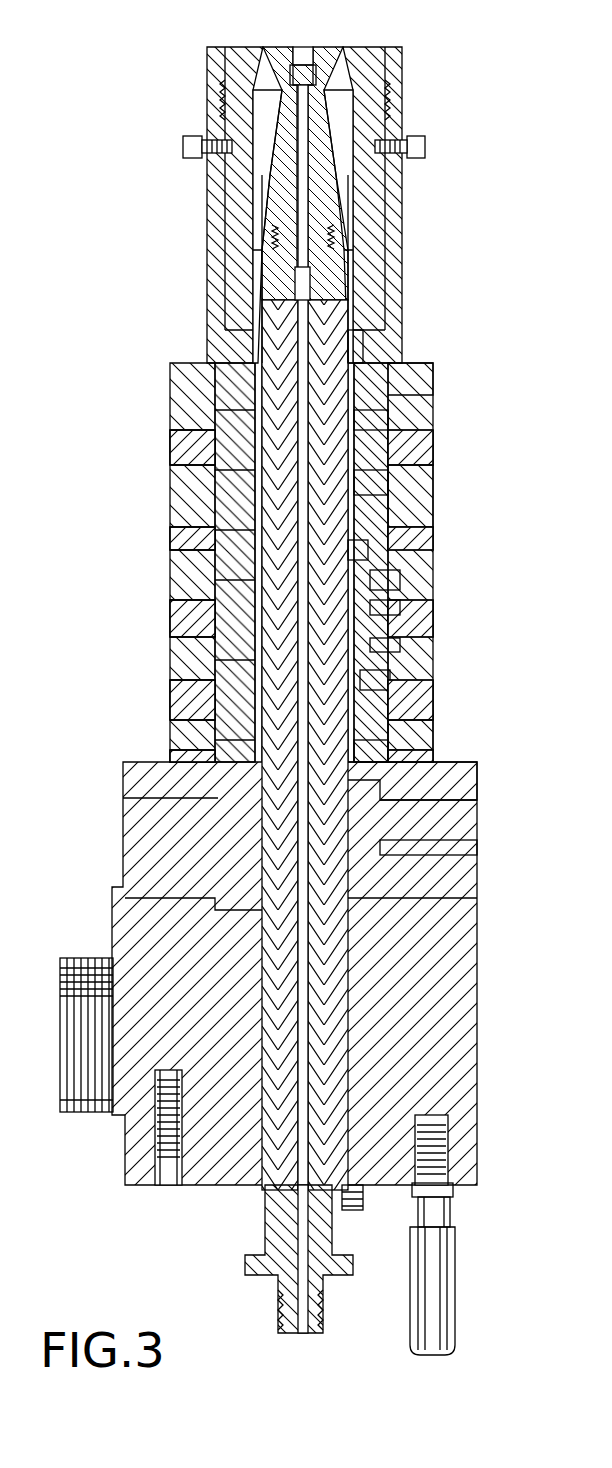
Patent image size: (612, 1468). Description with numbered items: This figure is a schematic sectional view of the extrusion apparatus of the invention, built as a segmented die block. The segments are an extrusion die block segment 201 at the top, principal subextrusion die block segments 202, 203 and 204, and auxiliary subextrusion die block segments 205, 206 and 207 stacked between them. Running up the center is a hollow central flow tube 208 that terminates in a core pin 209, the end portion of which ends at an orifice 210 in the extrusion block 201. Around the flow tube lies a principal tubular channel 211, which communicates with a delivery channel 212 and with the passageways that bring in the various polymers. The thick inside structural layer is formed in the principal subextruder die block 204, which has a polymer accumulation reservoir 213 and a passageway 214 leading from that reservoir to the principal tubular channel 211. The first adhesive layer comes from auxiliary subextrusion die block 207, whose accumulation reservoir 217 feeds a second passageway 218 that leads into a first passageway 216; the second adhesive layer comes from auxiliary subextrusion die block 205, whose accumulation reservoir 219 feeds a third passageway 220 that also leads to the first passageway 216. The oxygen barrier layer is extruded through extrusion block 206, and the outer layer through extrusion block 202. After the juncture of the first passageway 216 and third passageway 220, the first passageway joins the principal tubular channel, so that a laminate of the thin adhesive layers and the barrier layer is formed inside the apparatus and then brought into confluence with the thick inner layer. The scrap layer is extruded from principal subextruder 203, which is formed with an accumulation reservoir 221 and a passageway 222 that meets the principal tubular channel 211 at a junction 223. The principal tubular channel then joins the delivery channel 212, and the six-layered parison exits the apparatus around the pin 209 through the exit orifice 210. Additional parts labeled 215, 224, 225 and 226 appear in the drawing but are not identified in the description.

The extrusion die block segment 201 is at (403, 104).
The principal subextrusion die block segment 202 is at (436, 407).
The principal subextrusion die block segment 203 is at (435, 508).
The principal subextrusion die block segment 204 is at (480, 824).
The subextrusion die block segment 205 is at (385, 598).
The subextrusion die block segment 206 is at (435, 673).
The subextrusion die block segment 207 is at (435, 739).
The hollow central flow tube 208 is at (278, 1292).
The core pin 209 is at (297, 58).
The orifice 210 is at (333, 57).
The principal tubular channel 211 is at (350, 547).
The delivery channel 212 is at (352, 205).
The polymer accumulation reservoir 213 is at (375, 845).
The passageway 214 is at (372, 803).
The seal ring 215 is at (360, 750).
The first passageway 216 is at (435, 727).
The accumulation reservoir 217 is at (372, 680).
The second passageway 218 is at (385, 645).
The accumulation reservoir 219 is at (390, 606).
The third passageway 220 is at (393, 575).
The accumulation reservoir 221 is at (378, 518).
The passageway 222 is at (378, 483).
The junction 223 is at (385, 442).
The seal ring 224 is at (362, 418).
The flange ring 225 is at (435, 368).
The sleeve ring 226 is at (360, 347).